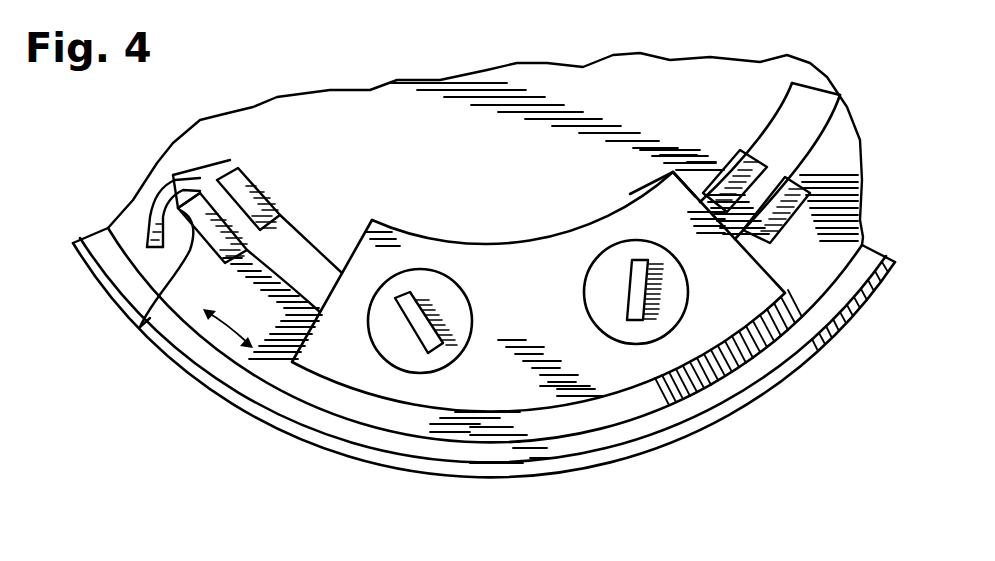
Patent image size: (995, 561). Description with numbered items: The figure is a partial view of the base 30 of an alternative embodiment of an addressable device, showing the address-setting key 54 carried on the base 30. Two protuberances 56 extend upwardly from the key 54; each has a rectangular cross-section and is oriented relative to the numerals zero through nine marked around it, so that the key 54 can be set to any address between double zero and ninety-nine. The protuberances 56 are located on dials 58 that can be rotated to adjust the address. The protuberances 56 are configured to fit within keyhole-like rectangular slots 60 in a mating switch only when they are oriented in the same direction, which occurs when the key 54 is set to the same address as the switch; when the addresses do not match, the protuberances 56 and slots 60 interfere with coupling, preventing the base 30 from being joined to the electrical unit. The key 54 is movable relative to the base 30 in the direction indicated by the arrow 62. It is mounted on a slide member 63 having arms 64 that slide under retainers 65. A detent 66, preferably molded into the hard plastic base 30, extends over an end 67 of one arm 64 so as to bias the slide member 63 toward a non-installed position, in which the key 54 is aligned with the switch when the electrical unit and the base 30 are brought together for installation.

The base 30 is at (100, 287).
The key 54 is at (410, 230).
The protuberances 56 is at (630, 320).
The dials 58 is at (585, 279).
The rectangular slots 60 is at (403, 327).
The arrow 62 is at (229, 323).
The slide member 63 is at (630, 200).
The arms 64 is at (312, 247).
The retainers 65 is at (252, 183).
The detent 66 is at (143, 214).
The end 67 is at (202, 173).